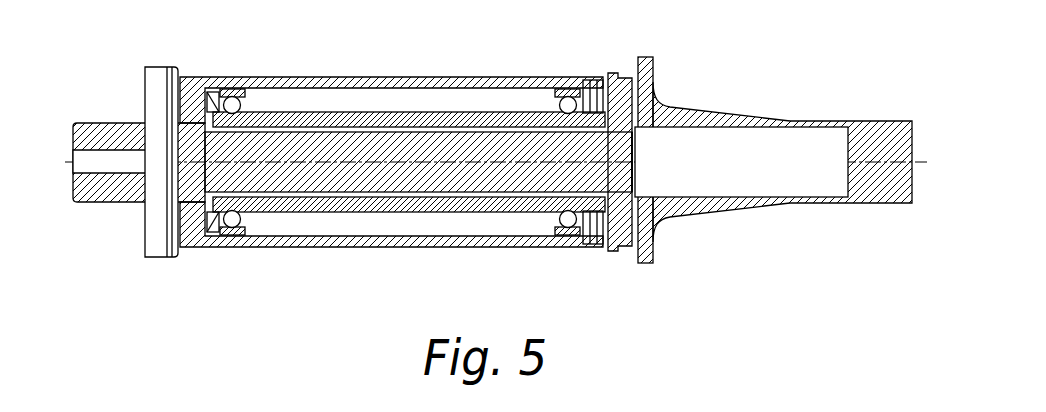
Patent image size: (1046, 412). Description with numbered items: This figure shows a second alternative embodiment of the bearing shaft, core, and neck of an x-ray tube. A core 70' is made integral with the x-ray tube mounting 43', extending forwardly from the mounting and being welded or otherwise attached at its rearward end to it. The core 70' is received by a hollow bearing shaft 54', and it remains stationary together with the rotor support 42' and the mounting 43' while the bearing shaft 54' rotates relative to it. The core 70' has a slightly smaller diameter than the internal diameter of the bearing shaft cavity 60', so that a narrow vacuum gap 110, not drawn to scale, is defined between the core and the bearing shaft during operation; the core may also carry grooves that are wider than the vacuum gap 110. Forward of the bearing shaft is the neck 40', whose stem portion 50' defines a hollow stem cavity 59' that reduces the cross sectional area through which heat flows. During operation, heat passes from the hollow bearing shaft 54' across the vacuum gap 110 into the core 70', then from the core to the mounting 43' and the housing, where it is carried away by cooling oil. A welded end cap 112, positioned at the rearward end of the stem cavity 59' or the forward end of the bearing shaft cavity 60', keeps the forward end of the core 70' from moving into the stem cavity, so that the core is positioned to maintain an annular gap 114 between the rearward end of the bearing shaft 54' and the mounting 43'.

The neck 40' is at (782, 136).
The rotor support 42' is at (391, 137).
The x-ray tube mounting 43' is at (137, 141).
The stem portion 50' is at (670, 171).
The hollow bearing shaft 54' is at (409, 122).
The stem cavity 59' is at (741, 193).
The bearing shaft cavity 60' is at (260, 249).
The core 70' is at (418, 114).
The vacuum gap 110 is at (275, 120).
The welded end cap 112 is at (638, 140).
The annular gap 114 is at (215, 220).